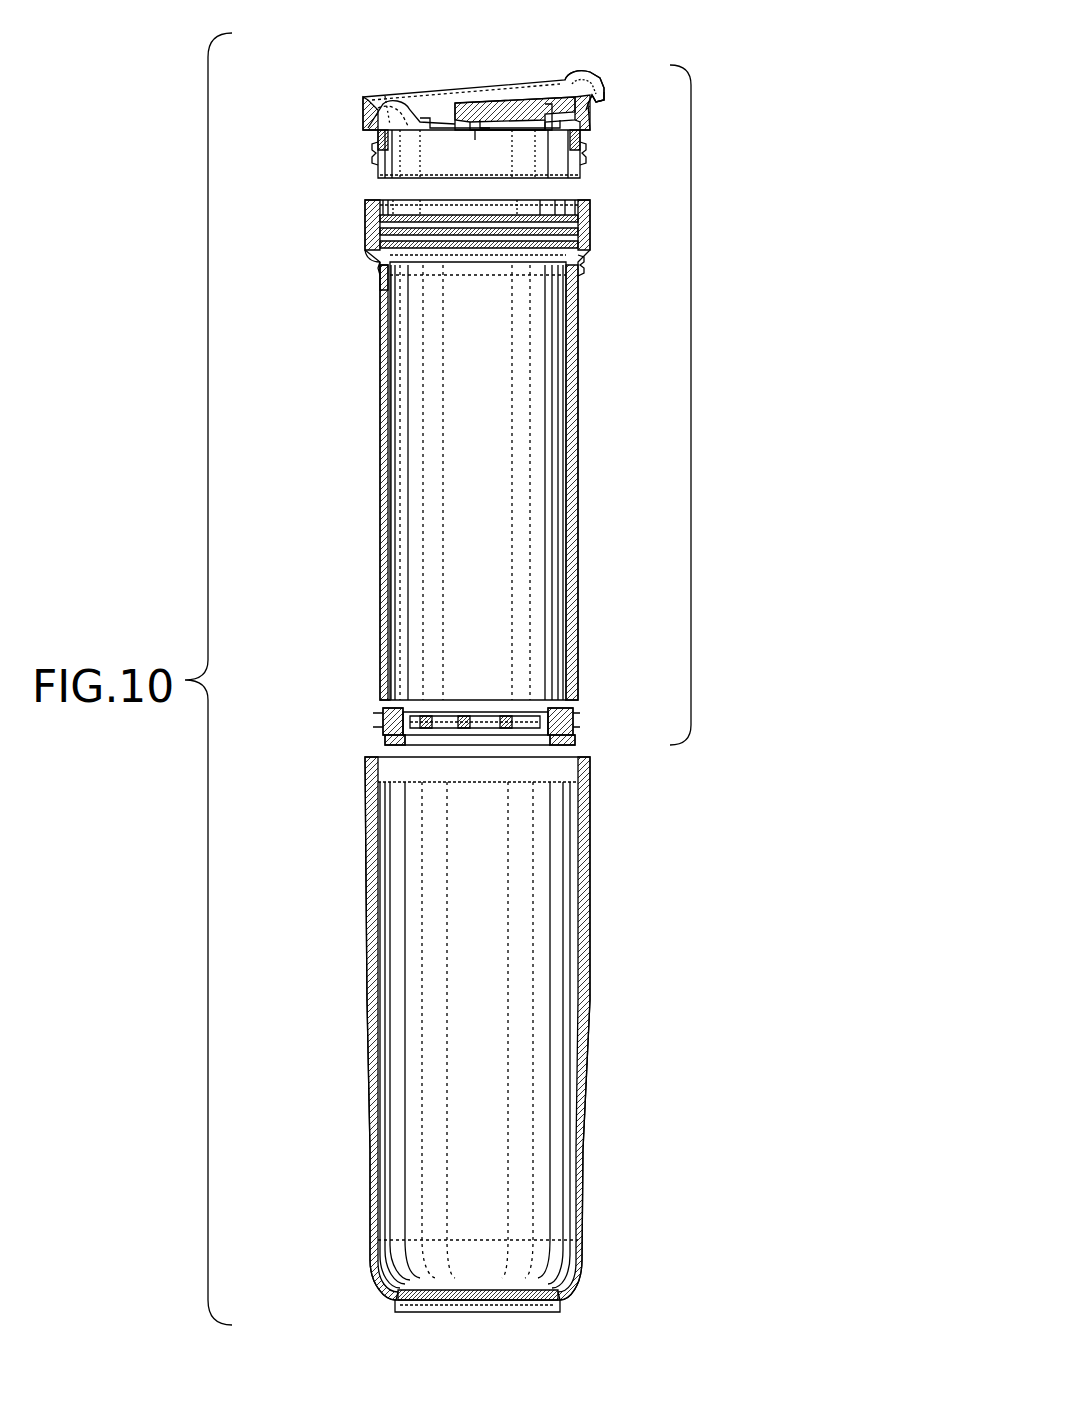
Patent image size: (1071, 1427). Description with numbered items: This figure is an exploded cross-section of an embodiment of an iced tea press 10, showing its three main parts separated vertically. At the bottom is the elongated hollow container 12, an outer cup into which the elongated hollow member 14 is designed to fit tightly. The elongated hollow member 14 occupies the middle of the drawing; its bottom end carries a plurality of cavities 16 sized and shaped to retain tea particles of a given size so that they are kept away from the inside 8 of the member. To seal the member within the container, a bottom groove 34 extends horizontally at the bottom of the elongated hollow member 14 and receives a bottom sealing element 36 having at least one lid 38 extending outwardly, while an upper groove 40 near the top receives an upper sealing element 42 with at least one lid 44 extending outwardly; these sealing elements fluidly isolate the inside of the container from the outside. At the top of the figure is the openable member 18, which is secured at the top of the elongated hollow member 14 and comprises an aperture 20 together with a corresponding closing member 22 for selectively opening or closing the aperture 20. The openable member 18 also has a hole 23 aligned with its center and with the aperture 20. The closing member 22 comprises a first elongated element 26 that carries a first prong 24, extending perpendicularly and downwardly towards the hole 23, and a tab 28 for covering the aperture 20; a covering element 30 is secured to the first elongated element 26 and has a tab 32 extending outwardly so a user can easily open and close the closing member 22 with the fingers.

The iced tea press 10 is at (806, 285).
The inside 8 is at (472, 498).
The elongated hollow container 12 is at (580, 1082).
The elongated hollow member 14 is at (709, 405).
The cavities 16 is at (472, 718).
The openable member 18 is at (476, 105).
The aperture 20 is at (553, 150).
The corresponding closing member 22 is at (586, 70).
The hole 23 is at (485, 138).
The first prong 24 is at (487, 128).
The first elongated element 26 is at (508, 125).
The tab 28 is at (552, 133).
The covering element 30 is at (525, 108).
The tab 32 is at (602, 93).
The bottom groove 34 is at (560, 743).
The bottom sealing element 36 is at (392, 720).
The lid 38 is at (577, 727).
The upper groove 40 is at (387, 273).
The upper sealing element 42 is at (375, 253).
The lid 44 is at (377, 267).